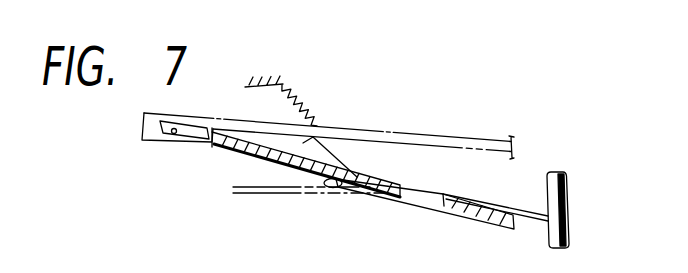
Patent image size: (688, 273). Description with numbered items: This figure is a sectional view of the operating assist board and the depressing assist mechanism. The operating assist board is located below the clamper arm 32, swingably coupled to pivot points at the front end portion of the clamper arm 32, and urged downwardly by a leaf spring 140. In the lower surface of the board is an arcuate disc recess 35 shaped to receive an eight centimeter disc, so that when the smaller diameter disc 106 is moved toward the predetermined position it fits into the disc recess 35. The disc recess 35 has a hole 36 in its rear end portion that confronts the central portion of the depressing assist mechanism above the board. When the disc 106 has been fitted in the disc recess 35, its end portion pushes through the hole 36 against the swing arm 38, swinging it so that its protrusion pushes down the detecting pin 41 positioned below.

The clamper arm 32 is at (437, 137).
The arcuate disc recess 35 is at (358, 171).
The hole 36 is at (445, 203).
The swing arm 38 is at (524, 211).
The detecting pin 41 is at (565, 193).
The smaller diameter 8 cm disc 106 is at (277, 197).
The leaf spring 140 is at (330, 141).